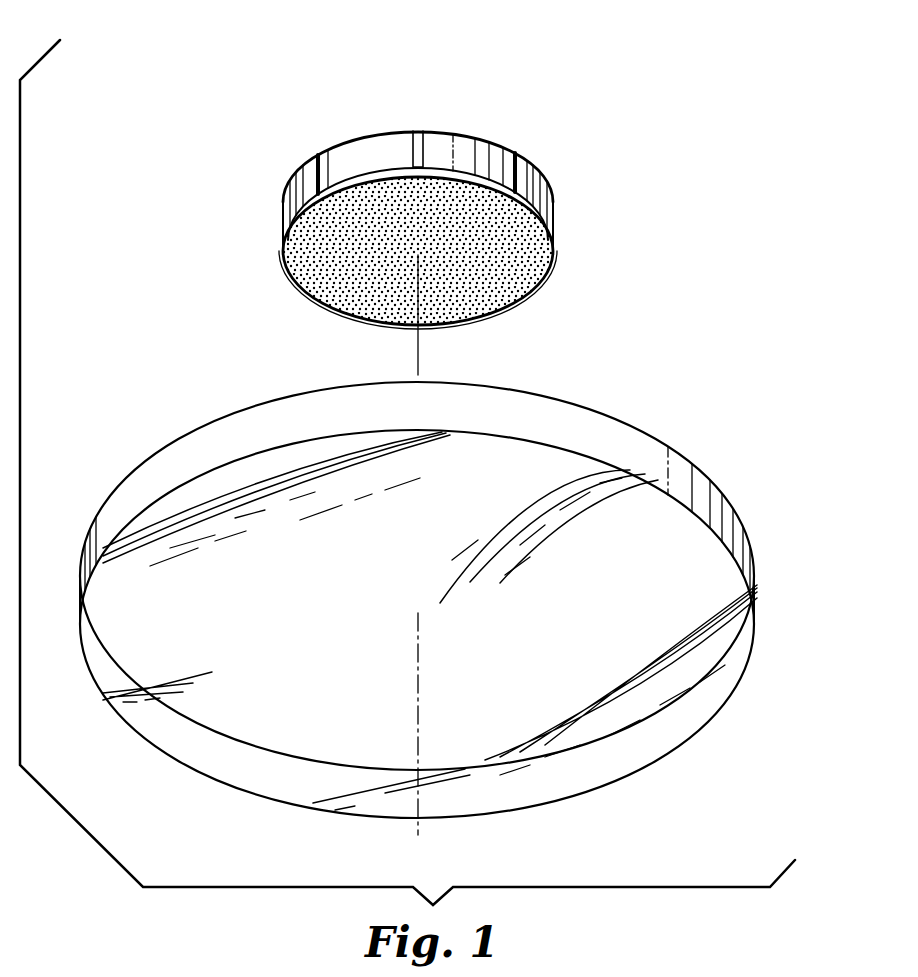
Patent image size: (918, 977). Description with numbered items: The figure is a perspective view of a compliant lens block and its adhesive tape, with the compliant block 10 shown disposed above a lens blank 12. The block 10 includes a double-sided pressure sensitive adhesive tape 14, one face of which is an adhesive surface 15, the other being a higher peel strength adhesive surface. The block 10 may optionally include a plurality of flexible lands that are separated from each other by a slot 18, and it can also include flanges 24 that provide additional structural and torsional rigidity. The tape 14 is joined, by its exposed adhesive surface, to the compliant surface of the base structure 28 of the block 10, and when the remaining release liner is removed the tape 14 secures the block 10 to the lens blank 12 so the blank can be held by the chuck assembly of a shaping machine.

The compliant block 10 is at (500, 70).
The lens blank 12 is at (563, 420).
The double-sided pressure sensitive adhesive tape 14 is at (312, 298).
The adhesive surface 15 is at (530, 275).
The slot 18 is at (322, 160).
The flanges 24 is at (380, 150).
The base structure 28 is at (300, 160).